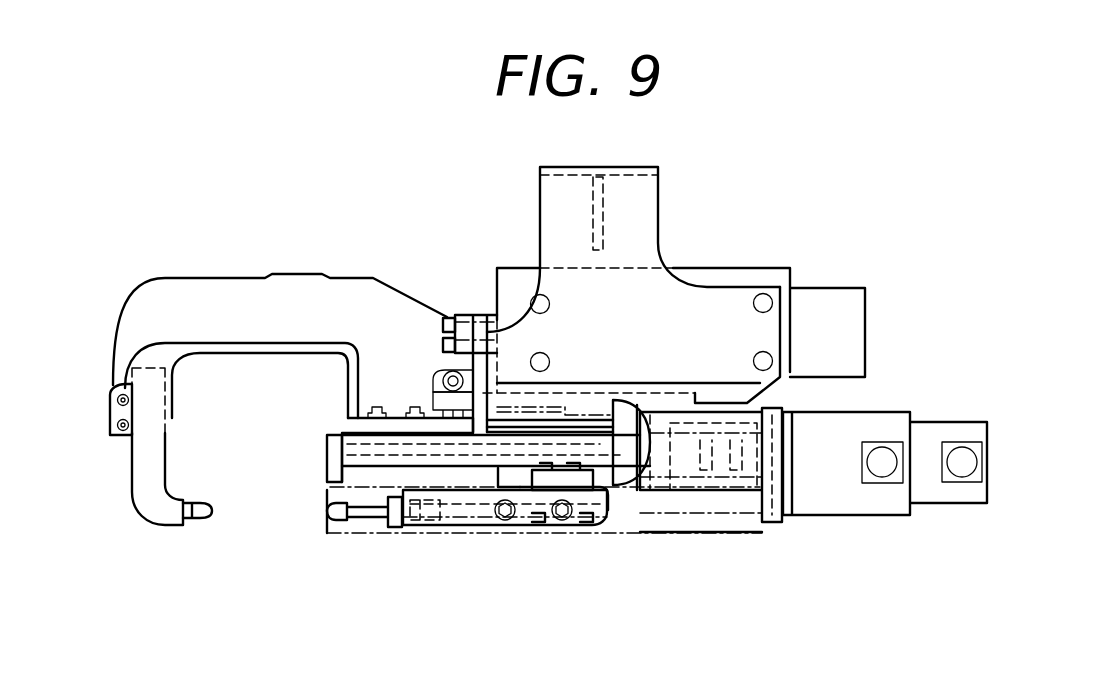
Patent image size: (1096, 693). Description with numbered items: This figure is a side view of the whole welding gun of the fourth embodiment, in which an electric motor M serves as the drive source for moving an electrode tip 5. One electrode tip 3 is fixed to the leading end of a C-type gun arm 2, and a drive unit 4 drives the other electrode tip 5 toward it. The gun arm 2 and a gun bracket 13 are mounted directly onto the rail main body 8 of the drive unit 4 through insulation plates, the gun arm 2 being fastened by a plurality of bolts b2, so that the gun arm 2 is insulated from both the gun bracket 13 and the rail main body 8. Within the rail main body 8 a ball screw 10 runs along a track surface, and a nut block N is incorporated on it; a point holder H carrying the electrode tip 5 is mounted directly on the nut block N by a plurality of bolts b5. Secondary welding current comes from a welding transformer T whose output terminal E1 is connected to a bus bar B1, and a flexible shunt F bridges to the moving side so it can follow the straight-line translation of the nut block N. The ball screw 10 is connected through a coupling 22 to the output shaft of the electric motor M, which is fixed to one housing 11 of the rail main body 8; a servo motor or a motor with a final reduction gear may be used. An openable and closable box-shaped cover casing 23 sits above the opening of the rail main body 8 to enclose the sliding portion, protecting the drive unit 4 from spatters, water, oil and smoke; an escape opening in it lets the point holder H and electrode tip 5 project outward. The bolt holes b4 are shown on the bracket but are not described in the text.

The gun arm 2 is at (236, 285).
The electrode tip 3 is at (200, 518).
The drive unit 4 is at (325, 463).
The electrode tip 5 is at (340, 517).
The rail main body 8 is at (457, 467).
The ball screw 10 is at (383, 527).
The housing 11 is at (660, 487).
The gun bracket 13 is at (652, 203).
The coupling 22 is at (715, 482).
The cover casing 23 is at (593, 535).
The bus bar B1 is at (447, 330).
The output terminal E1 is at (480, 315).
The welding transformer T is at (512, 277).
The shunt F is at (612, 405).
The bolts b2 is at (415, 405).
The bolt hole b4 is at (767, 293).
The bolts b5 is at (540, 523).
The point holder H is at (445, 527).
The nut block N is at (608, 490).
The electric motor M is at (855, 503).